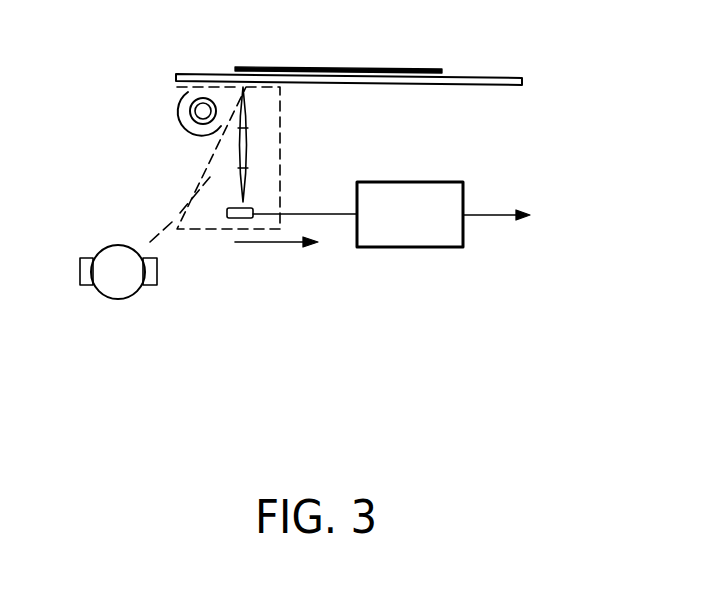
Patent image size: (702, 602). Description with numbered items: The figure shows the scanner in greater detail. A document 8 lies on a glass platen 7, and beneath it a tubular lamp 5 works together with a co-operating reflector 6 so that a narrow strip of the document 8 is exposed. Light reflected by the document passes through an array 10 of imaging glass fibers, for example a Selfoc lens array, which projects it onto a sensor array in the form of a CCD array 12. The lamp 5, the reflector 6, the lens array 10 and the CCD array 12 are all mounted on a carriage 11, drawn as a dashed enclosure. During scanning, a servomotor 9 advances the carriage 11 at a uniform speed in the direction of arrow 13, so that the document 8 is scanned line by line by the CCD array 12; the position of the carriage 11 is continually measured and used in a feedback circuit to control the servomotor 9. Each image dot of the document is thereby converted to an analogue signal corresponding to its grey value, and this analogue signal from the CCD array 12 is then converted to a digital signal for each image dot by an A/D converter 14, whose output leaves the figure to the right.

The tubular lamp 5 is at (186, 93).
The reflector 6 is at (200, 134).
The glass platen 7 is at (503, 85).
The document 8 is at (343, 68).
The servomotor 9 is at (135, 293).
The array of imaging glass fibers 10 is at (247, 143).
The carriage 11 is at (281, 110).
The CCD array 12 is at (235, 218).
The arrow 13 is at (277, 244).
The A/D converter 14 is at (397, 182).